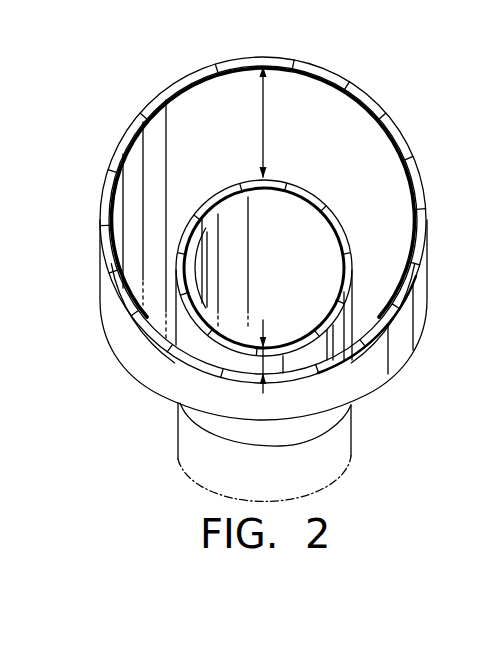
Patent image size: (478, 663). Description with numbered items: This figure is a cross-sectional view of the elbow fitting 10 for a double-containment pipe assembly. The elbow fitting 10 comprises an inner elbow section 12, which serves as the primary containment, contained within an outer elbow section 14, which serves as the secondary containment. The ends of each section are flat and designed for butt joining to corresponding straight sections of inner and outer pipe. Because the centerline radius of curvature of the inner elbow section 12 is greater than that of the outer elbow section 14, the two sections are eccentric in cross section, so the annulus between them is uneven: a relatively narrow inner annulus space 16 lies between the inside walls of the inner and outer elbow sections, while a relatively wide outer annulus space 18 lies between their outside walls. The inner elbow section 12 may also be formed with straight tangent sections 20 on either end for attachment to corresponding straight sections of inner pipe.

The elbow fitting 10 is at (281, 269).
The inner elbow section 12 is at (343, 226).
The outer elbow section 14 is at (428, 230).
The inner annulus space 16 is at (264, 393).
The outer annulus space 18 is at (264, 150).
The straight tangent sections 20 is at (352, 413).